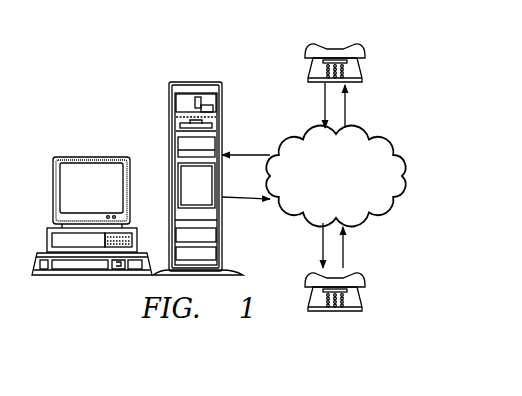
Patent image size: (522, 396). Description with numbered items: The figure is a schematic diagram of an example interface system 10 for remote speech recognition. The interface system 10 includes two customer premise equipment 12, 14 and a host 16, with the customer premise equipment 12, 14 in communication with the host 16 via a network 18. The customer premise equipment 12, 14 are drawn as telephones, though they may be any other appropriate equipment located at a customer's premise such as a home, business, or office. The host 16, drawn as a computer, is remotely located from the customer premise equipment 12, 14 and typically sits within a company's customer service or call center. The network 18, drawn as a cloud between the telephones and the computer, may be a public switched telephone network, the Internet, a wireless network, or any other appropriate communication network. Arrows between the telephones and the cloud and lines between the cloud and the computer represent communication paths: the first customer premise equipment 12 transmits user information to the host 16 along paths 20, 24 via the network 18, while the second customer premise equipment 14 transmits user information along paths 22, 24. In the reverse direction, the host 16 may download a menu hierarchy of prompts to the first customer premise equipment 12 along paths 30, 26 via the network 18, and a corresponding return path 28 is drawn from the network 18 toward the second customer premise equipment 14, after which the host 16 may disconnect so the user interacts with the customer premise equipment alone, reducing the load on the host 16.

The interface system 10 is at (418, 120).
The customer premise equipment 12 is at (363, 76).
The customer premise equipment 14 is at (362, 305).
The host 16 is at (118, 115).
The network 18 is at (348, 185).
The path 20 is at (325, 100).
The path 22 is at (344, 250).
The path 24 is at (258, 155).
The path 26 is at (346, 106).
The outgoing call path to second telephone 28 is at (323, 248).
The path 30 is at (252, 198).